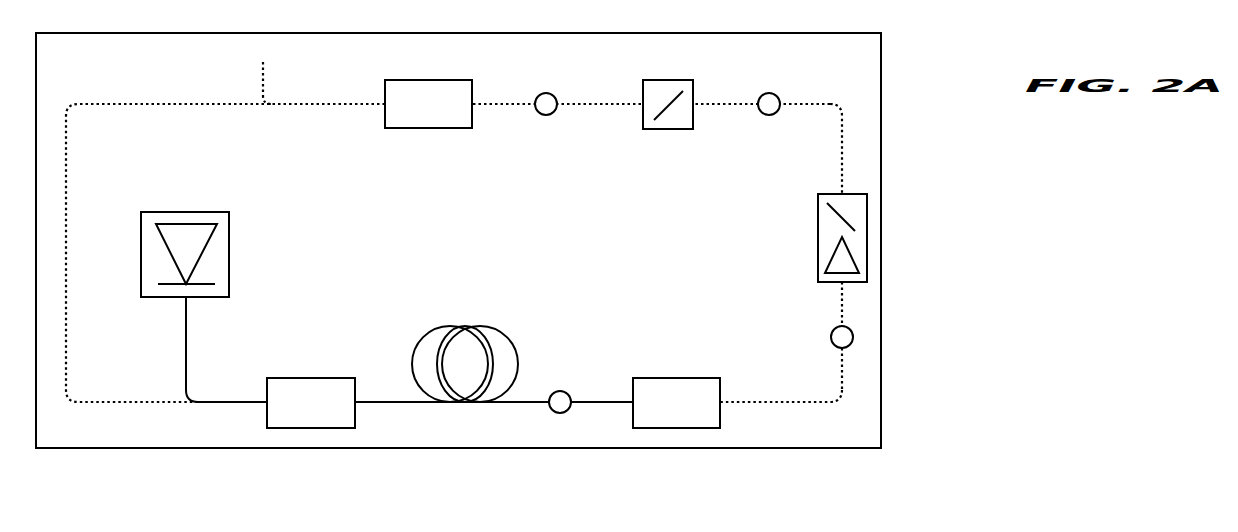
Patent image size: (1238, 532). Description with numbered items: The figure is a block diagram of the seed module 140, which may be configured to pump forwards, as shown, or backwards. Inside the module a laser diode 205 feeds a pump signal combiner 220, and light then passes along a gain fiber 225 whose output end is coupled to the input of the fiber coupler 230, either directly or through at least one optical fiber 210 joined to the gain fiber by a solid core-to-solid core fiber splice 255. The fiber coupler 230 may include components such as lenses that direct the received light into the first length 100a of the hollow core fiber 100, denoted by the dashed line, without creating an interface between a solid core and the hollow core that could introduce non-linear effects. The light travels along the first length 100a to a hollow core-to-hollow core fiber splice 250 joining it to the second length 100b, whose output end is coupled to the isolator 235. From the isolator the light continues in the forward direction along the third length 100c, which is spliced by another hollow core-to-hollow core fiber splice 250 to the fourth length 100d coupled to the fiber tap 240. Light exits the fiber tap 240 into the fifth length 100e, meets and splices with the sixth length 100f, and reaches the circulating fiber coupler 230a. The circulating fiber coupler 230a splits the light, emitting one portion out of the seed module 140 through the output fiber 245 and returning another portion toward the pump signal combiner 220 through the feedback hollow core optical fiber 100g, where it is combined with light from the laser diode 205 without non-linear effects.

The hollow core fiber 100 is at (531, 267).
The first length 100a is at (760, 403).
The second length 100b is at (842, 304).
The third length 100c is at (843, 168).
The fourth length 100d is at (710, 104).
The fifth length 100e is at (575, 104).
The sixth length 100f is at (483, 104).
The feedback hollow core optical fiber 100g is at (118, 104).
The seed module 140 is at (881, 431).
The laser diode 205 is at (229, 255).
The optical fiber 210 is at (186, 334).
The pump signal combiner 220 is at (307, 378).
The gain fiber 225 is at (493, 328).
The fiber coupler 230 is at (660, 378).
The circulating fiber coupler 230a is at (437, 128).
The isolator 235 is at (867, 240).
The fiber tap 240 is at (665, 129).
The output fiber 245 is at (263, 79).
The hollow core-to-hollow core fiber splice 250 is at (553, 112).
The solid core-to-solid core fiber splice 255 is at (568, 393).